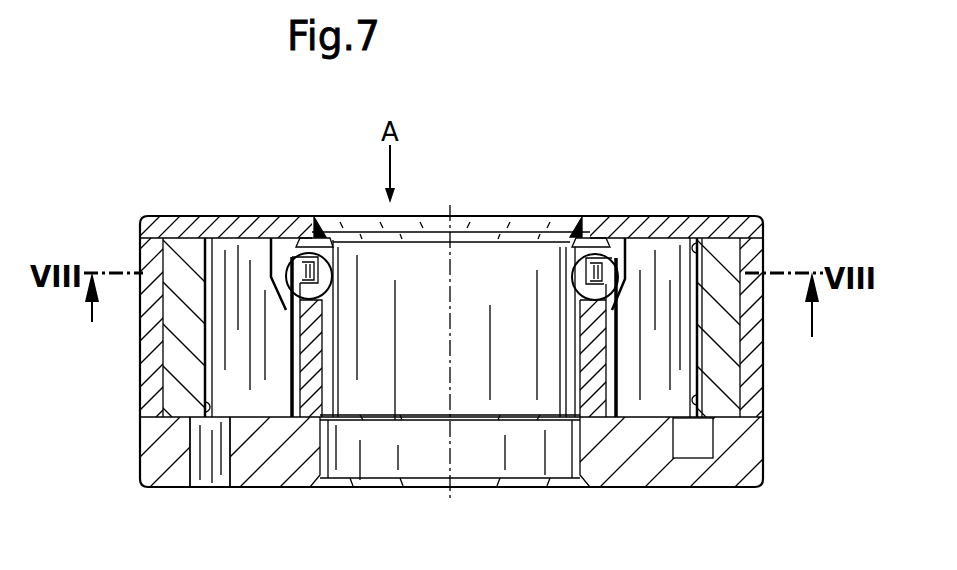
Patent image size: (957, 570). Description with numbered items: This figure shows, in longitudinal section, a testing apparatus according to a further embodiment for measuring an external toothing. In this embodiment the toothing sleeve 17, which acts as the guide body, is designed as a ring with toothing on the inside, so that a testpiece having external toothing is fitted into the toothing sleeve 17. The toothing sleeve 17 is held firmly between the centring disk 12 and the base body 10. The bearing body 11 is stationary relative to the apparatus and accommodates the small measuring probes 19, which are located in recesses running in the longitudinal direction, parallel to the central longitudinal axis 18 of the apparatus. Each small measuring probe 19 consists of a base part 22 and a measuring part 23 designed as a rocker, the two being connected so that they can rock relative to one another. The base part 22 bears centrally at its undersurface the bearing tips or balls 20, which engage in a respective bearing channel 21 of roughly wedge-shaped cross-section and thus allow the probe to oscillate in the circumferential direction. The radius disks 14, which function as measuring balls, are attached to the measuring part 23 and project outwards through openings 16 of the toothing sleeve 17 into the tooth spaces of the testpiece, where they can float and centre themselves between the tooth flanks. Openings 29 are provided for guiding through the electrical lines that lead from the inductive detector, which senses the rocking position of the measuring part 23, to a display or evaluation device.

The base body 10 is at (280, 450).
The bearing body 11 is at (728, 308).
The centring disk 12 is at (658, 228).
The radius disk 14 is at (309, 252).
The opening 16 is at (318, 238).
The toothing sleeve 17 is at (592, 392).
The central longitudinal axis 18 is at (450, 355).
The small measuring probe 19 is at (185, 328).
The bearing tip or ball 20 is at (206, 240).
The bearing channel 21 is at (693, 380).
The base part 22 is at (250, 260).
The measuring part 23 is at (272, 245).
The opening 29 is at (208, 445).